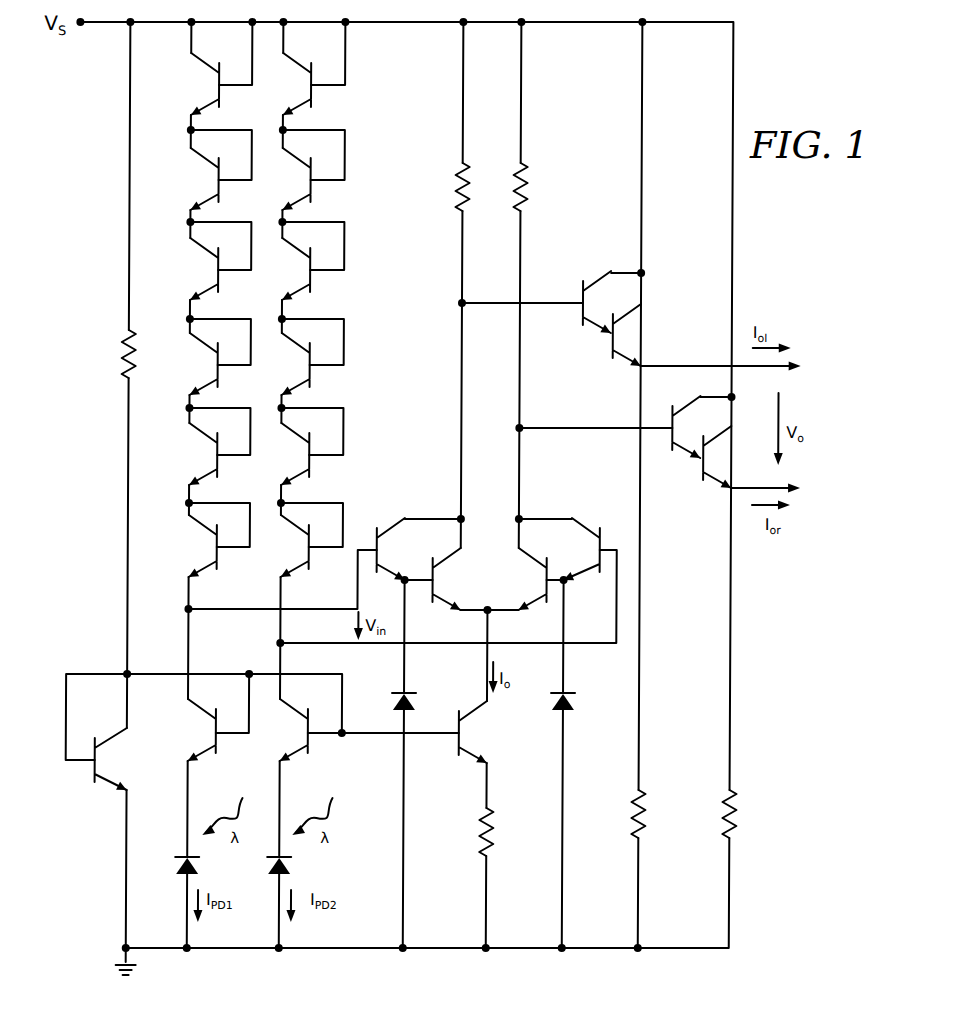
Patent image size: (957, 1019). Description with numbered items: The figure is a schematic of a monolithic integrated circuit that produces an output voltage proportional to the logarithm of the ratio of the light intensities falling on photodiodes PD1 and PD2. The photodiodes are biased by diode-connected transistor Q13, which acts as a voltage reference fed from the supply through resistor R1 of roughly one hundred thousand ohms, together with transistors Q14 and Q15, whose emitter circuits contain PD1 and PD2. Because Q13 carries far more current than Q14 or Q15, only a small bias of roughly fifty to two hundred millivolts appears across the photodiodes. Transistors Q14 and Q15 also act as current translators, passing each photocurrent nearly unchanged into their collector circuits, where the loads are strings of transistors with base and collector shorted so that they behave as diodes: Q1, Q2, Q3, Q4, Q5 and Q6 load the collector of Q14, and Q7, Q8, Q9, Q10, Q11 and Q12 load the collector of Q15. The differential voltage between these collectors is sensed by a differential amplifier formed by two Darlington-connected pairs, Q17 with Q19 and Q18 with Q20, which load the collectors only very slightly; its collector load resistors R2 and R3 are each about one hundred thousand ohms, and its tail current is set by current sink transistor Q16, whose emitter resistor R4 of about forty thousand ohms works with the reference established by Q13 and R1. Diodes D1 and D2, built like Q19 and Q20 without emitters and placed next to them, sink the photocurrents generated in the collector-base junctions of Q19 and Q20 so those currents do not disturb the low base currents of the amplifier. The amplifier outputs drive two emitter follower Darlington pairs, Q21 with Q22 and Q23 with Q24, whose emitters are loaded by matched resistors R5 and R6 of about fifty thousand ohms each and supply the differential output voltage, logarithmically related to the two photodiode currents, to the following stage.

The diode-connected transistor Q1 is at (198, 84).
The diode-connected transistor Q2 is at (197, 179).
The diode-connected transistor Q3 is at (197, 269).
The diode-connected transistor Q4 is at (197, 364).
The diode-connected transistor Q5 is at (196, 454).
The diode-connected transistor Q6 is at (196, 546).
The diode-connected transistor Q7 is at (291, 84).
The diode-connected transistor Q8 is at (290, 179).
The diode-connected transistor Q9 is at (290, 269).
The diode-connected transistor Q10 is at (289, 364).
The diode-connected transistor Q11 is at (288, 454).
The diode-connected transistor Q12 is at (288, 546).
The bipolar transistor Q13 is at (113, 759).
The current translator bipolar transistor Q14 is at (193, 730).
The current translator bipolar transistor Q15 is at (286, 730).
The current sink transistor Q16 is at (477, 732).
The differential amplifier transistor Q17 is at (393, 549).
The differential amplifier transistor Q18 is at (579, 549).
The differential amplifier transistor Q19 is at (448, 579).
The differential amplifier transistor Q20 is at (524, 579).
The Darlington-connected output transistor Q21 is at (600, 302).
The Darlington-connected output transistor Q22 is at (633, 335).
The Darlington-connected output transistor Q23 is at (690, 427).
The Darlington-connected output transistor Q24 is at (721, 457).
The resistor R1 is at (114, 354).
The collector load resistor R2 is at (443, 187).
The collector load resistor R3 is at (507, 187).
The emitter resistor R4 is at (470, 832).
The emitter follower output load resistor R5 is at (620, 814).
The emitter follower output load resistor R6 is at (714, 814).
The diode D1 is at (415, 705).
The diode D2 is at (575, 709).
The photodiode PD1 is at (166, 876).
The photodiode PD2 is at (298, 864).